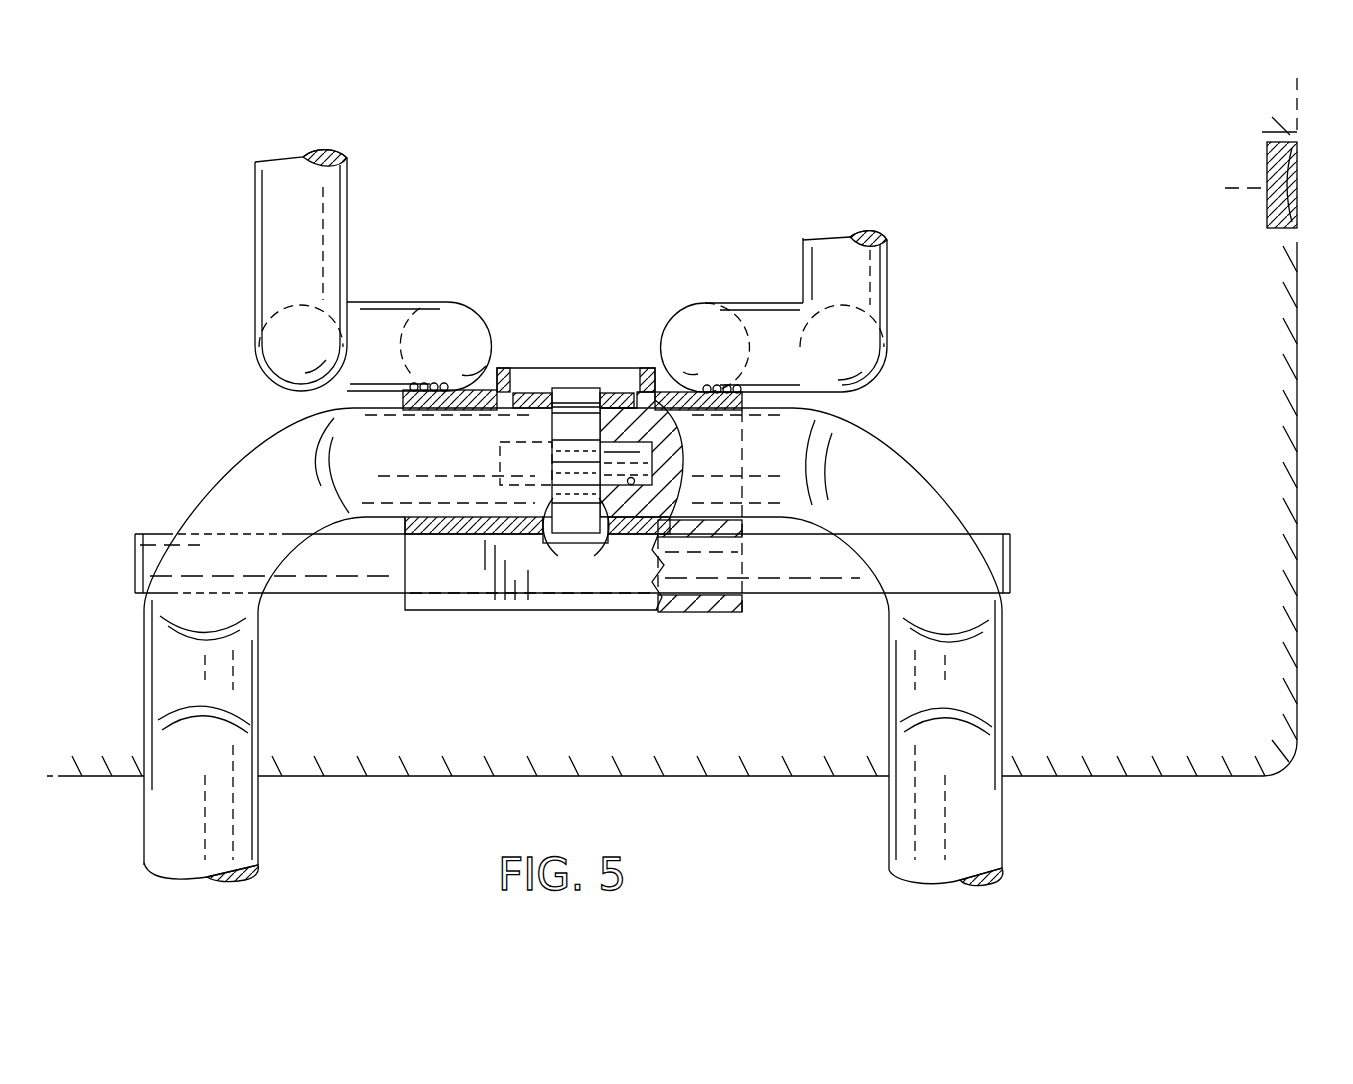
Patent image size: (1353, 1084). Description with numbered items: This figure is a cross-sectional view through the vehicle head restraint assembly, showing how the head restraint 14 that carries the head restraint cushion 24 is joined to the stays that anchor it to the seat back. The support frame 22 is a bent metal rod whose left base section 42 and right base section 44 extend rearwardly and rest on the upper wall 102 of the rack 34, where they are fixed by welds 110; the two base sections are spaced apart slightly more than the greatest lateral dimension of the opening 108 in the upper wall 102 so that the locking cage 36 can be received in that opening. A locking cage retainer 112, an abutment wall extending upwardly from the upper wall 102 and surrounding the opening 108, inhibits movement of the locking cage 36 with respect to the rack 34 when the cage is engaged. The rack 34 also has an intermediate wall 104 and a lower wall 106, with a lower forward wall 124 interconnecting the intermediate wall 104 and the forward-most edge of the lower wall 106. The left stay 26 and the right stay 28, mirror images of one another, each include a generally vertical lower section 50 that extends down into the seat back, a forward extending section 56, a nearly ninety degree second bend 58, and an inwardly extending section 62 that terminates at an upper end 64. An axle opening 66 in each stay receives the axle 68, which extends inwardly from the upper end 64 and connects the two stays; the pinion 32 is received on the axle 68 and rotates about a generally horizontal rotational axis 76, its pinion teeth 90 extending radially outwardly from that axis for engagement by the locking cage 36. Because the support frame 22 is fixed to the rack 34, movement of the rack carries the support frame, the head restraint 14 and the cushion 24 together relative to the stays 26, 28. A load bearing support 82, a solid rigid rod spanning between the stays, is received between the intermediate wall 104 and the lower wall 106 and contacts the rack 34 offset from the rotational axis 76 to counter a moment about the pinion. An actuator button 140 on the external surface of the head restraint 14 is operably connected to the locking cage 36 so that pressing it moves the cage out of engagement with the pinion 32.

The head restraint 14 is at (1292, 780).
The support frame 22 is at (252, 236).
The head restraint cushion 24 is at (1177, 778).
The left stay 26 is at (888, 834).
The right stay 28 is at (262, 825).
The pinion 32 is at (575, 386).
The rack 34 is at (502, 614).
The locking cage 36 is at (533, 392).
The left base section 42 is at (684, 306).
The right base section 44 is at (456, 302).
The lower section 50 is at (148, 820).
The forward extending section 56 is at (232, 470).
The second bend 58 is at (318, 490).
The inwardly extending section 62 is at (724, 512).
The upper end 64 is at (555, 546).
The axle opening 66 is at (632, 485).
The axle 68 is at (654, 452).
The rotational axis 76 is at (516, 458).
The load bearing support 82 is at (828, 584).
The pinion teeth 90 is at (577, 550).
The first wall 102 is at (744, 406).
The second wall 104 is at (700, 532).
The third wall 106 is at (722, 604).
The opening 108 is at (638, 392).
The welds 110 is at (450, 384).
The locking cage retainer 112 is at (504, 370).
The lower forward wall 124 is at (417, 568).
The actuator button 140 is at (1296, 178).